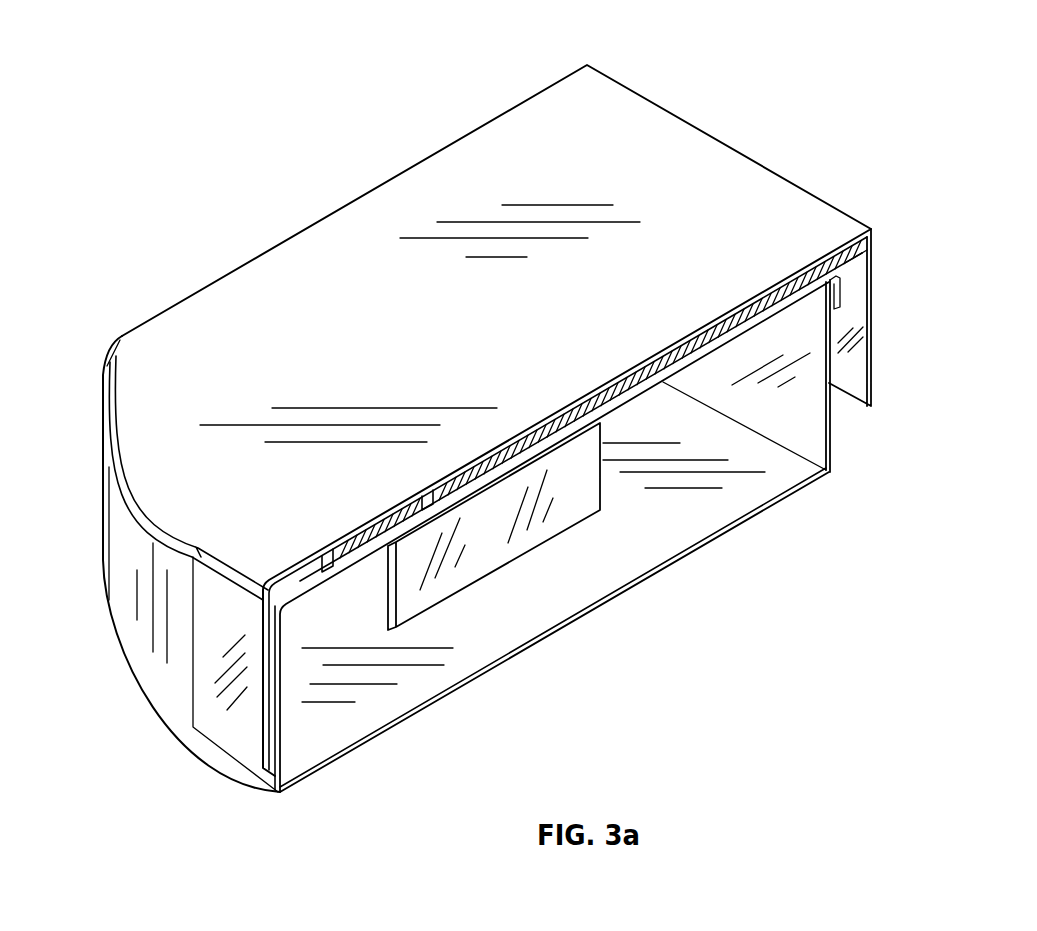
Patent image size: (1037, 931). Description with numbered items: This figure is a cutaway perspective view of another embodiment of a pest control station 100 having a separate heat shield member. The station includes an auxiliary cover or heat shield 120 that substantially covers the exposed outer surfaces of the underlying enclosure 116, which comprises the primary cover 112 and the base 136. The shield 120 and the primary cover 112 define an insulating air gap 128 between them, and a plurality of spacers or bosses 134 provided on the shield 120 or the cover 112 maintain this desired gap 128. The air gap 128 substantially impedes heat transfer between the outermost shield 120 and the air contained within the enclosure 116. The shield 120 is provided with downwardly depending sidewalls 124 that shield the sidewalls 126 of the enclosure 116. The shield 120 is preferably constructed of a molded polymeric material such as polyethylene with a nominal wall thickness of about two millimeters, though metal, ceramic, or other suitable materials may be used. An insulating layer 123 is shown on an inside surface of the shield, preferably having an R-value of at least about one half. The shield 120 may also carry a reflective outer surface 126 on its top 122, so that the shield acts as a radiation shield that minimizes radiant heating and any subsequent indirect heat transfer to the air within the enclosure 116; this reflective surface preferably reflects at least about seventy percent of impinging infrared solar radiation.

The pest control station 100 is at (297, 126).
The primary cover 112 is at (548, 452).
The enclosure 116 is at (828, 420).
The heat shield 120 is at (672, 108).
The top 122 is at (856, 262).
The insulating layer 123 is at (866, 250).
The downwardly depending sidewalls 124 is at (872, 370).
The reflective outer surface 126 is at (388, 330).
The insulating air gap 128 is at (763, 318).
The spacers or bosses 134 is at (345, 557).
The base 136 is at (380, 737).